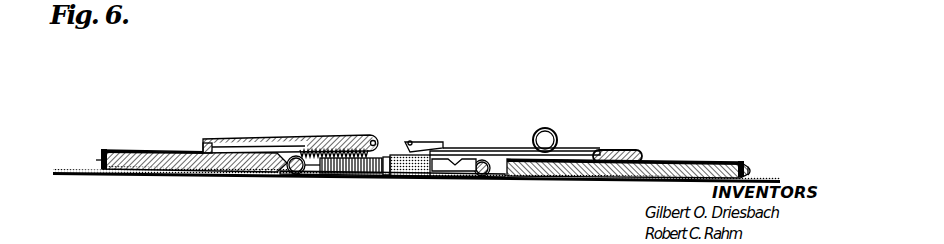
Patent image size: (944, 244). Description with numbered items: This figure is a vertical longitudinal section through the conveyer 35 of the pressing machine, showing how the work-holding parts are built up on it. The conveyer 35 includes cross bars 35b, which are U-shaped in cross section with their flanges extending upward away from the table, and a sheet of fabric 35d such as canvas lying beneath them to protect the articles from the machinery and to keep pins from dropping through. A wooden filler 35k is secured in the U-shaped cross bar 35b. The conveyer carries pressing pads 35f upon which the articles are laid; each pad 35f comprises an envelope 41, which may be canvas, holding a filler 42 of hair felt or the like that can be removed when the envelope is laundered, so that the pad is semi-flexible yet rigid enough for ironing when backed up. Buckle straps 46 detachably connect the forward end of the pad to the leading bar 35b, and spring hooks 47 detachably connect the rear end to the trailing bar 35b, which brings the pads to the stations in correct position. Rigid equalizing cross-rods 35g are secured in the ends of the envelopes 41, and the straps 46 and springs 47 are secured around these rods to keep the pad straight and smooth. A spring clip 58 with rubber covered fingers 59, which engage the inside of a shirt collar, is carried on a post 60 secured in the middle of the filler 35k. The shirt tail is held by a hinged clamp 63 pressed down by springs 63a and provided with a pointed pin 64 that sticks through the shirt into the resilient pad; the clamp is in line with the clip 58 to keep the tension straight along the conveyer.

The conveyer 35 is at (194, 130).
The cross bars 35b is at (387, 178).
The sheet of fabric 35d is at (80, 177).
The pressing pads 35f is at (148, 152).
The equalizing cross-rods 35g is at (292, 178).
The wooden filler 35k is at (403, 156).
The envelope 41 is at (103, 150).
The filler 42 is at (101, 161).
The buckle straps 46 is at (477, 164).
The spring hooks 47 is at (362, 180).
The spring clip 58 is at (542, 133).
The rubber covered fingers 59 is at (617, 150).
The post 60 is at (409, 141).
The hinged clamp 63 is at (350, 135).
The springs 63a is at (314, 141).
The pointed pin 64 is at (183, 150).